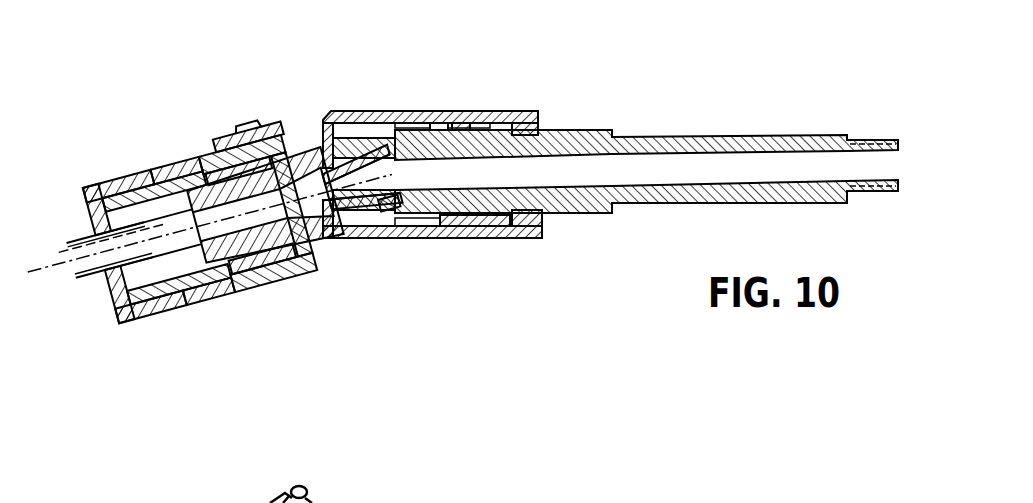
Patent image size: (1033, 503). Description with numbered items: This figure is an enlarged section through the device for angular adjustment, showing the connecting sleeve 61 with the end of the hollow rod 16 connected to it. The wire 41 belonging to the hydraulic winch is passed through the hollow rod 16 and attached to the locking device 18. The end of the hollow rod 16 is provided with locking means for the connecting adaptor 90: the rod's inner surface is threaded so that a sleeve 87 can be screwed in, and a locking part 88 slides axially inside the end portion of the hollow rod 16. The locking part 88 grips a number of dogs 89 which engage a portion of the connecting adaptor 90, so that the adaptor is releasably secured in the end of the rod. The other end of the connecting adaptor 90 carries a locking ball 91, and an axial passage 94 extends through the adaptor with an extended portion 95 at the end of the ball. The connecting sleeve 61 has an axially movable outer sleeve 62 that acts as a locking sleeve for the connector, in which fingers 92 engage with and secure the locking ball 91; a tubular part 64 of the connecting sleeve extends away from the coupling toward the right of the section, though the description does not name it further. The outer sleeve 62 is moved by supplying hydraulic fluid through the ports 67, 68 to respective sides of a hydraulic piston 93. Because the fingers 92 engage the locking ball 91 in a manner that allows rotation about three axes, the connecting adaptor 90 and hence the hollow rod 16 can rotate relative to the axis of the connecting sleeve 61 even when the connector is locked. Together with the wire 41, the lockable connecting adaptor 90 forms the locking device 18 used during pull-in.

The hollow rod 16 is at (118, 180).
The locking device 18 is at (178, 104).
The wire 41 is at (82, 277).
The connecting sleeve 61 is at (372, 72).
The outer sleeve 62 is at (523, 111).
The tubular shaft 64 is at (706, 137).
The port 67 is at (460, 112).
The port 68 is at (440, 112).
The sleeve 87 is at (207, 297).
The locking part 88 is at (270, 277).
The dogs 89 is at (250, 270).
The connecting adaptor 90 is at (322, 247).
The locking ball 91 is at (400, 193).
The fingers 92 is at (360, 140).
The hydraulic piston 93 is at (466, 226).
The axial passage 94 is at (243, 147).
The extended portion 95 is at (380, 192).